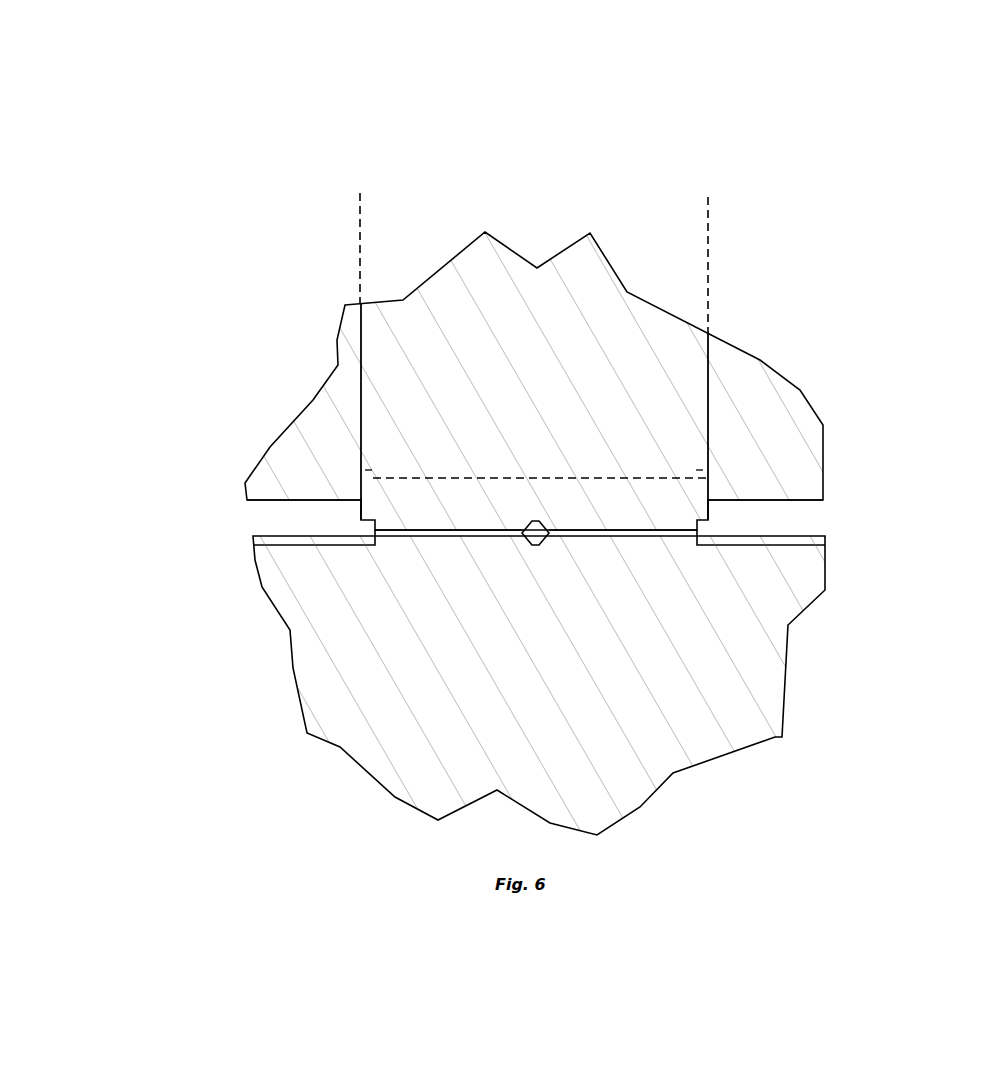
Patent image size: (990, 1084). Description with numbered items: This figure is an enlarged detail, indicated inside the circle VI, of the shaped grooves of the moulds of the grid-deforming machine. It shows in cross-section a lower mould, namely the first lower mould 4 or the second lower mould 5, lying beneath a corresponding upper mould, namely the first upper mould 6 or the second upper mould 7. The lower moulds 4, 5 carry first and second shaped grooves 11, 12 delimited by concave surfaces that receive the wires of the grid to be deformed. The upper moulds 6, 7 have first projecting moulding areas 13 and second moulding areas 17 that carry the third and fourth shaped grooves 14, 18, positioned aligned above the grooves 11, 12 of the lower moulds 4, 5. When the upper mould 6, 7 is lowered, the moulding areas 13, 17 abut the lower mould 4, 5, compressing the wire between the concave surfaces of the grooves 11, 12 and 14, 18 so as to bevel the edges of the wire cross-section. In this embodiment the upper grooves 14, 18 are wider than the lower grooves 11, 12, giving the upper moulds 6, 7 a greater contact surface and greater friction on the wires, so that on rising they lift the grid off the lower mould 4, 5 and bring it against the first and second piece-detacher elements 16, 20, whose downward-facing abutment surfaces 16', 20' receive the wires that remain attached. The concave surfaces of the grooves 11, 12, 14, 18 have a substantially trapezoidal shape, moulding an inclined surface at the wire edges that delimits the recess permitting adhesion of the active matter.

The first lower mould 4 is at (557, 685).
The second lower mould 5 is at (687, 730).
The first upper mould 6 is at (531, 336).
The second upper mould 7 is at (355, 233).
The first shaped grooves 11 is at (387, 703).
The second shaped grooves 12 is at (535, 545).
The first projecting moulding areas 13 is at (539, 375).
The third shaped grooves 14 is at (542, 321).
The first piece-detacher element 16 is at (545, 437).
The second moulding areas 17 is at (423, 478).
The fourth shaped grooves 18 is at (527, 473).
The second piece-detacher element 20 is at (545, 437).
The abutment surface 16' is at (555, 559).
The abutment surface 20' is at (555, 559).
The circle VI is at (795, 268).